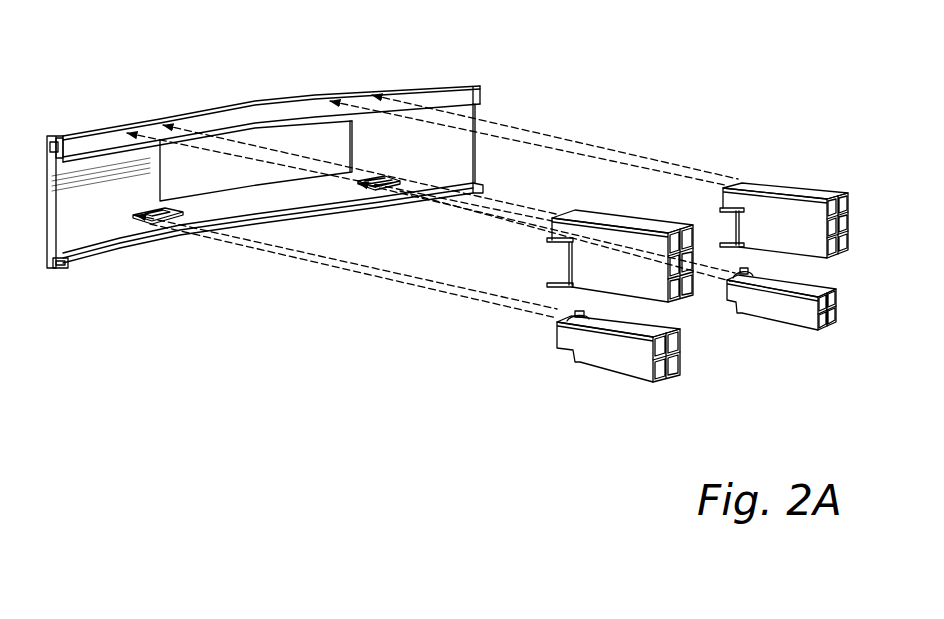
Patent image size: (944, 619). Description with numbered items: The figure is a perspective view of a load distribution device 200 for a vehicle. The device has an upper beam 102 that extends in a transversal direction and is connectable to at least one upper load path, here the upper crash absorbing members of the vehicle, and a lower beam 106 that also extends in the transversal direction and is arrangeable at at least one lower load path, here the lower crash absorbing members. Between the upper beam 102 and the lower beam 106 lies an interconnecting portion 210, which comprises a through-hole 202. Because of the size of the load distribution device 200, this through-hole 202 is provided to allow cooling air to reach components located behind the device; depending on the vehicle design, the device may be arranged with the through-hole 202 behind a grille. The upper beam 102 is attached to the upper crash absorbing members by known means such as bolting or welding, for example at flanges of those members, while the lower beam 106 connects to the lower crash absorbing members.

The load distribution device 200 is at (203, 71).
The upper beam 102 is at (49, 135).
The lower beam 106 is at (55, 268).
The through-hole 202 is at (195, 172).
The interconnecting portion 210 is at (453, 156).